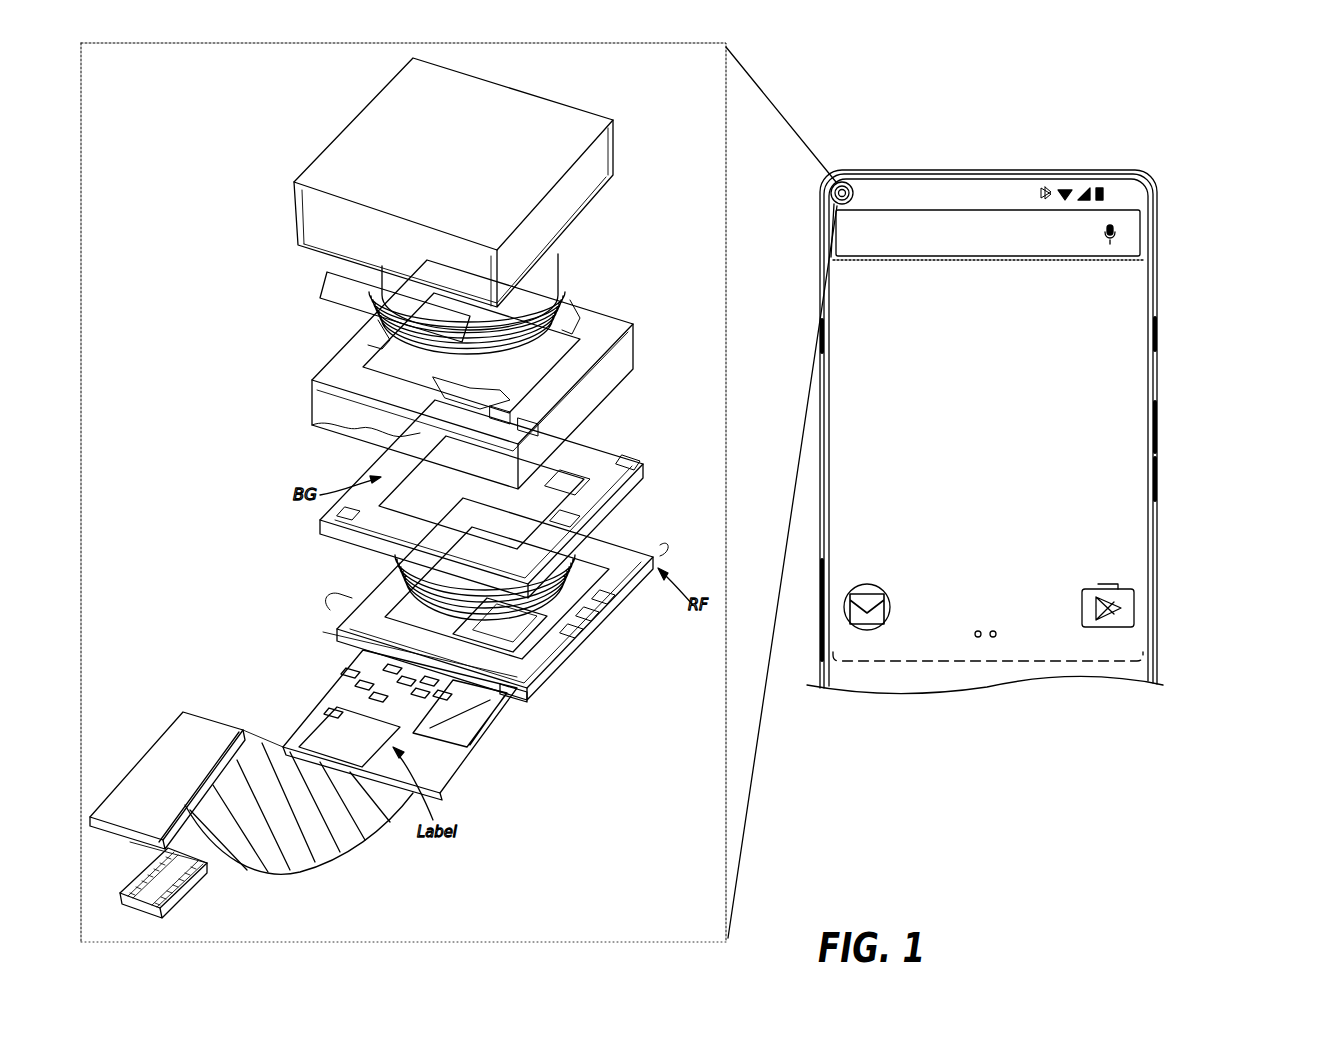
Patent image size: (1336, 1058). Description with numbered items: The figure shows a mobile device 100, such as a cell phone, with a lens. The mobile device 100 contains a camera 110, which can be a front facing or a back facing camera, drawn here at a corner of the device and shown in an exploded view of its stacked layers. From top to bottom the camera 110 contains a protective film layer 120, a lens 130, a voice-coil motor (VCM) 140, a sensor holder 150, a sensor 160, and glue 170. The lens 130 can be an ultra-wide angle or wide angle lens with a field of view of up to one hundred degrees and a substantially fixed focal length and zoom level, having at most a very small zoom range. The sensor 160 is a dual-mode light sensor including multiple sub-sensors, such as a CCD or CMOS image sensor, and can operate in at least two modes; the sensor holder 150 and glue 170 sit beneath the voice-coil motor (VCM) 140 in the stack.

The mobile device 100 is at (1184, 202).
The camera 110 is at (847, 181).
The protective film layer 120 is at (598, 72).
The lens 130 is at (555, 283).
The voice-coil motor (VCM) 140 is at (640, 308).
The sensor holder 150 is at (637, 440).
The sensor 160 is at (520, 630).
The glue 170 is at (513, 693).